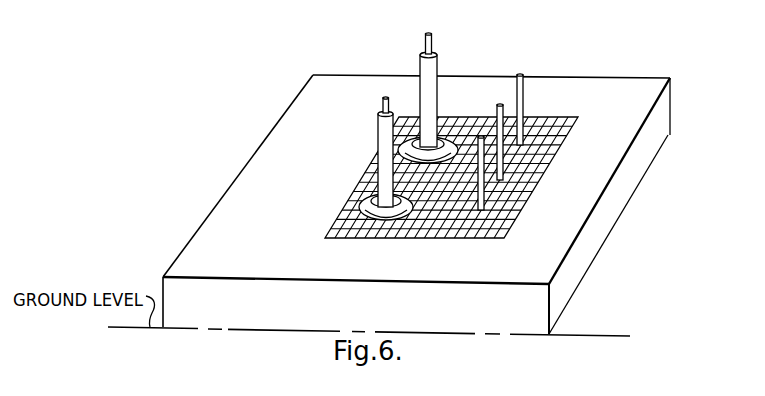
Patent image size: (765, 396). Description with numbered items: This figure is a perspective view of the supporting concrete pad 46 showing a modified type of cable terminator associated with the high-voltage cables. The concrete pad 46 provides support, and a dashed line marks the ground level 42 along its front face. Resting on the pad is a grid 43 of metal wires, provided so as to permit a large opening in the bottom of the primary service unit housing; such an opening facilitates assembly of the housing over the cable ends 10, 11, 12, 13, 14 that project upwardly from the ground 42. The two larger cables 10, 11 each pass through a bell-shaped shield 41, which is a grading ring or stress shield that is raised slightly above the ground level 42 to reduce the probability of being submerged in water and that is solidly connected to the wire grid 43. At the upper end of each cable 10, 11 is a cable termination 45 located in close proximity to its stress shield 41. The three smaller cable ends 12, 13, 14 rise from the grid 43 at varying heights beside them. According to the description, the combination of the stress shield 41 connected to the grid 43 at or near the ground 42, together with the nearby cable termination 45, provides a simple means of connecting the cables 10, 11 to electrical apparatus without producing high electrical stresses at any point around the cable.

The cable 10 is at (426, 44).
The cable 11 is at (384, 99).
The cable end 12 is at (481, 134).
The cable end 13 is at (500, 103).
The cable end 14 is at (519, 72).
The bell-shaped shield 41 is at (448, 134).
The ground level 42 is at (596, 336).
The grid 43 is at (520, 182).
The cable termination 45 is at (434, 50).
The concrete pad 46 is at (610, 232).